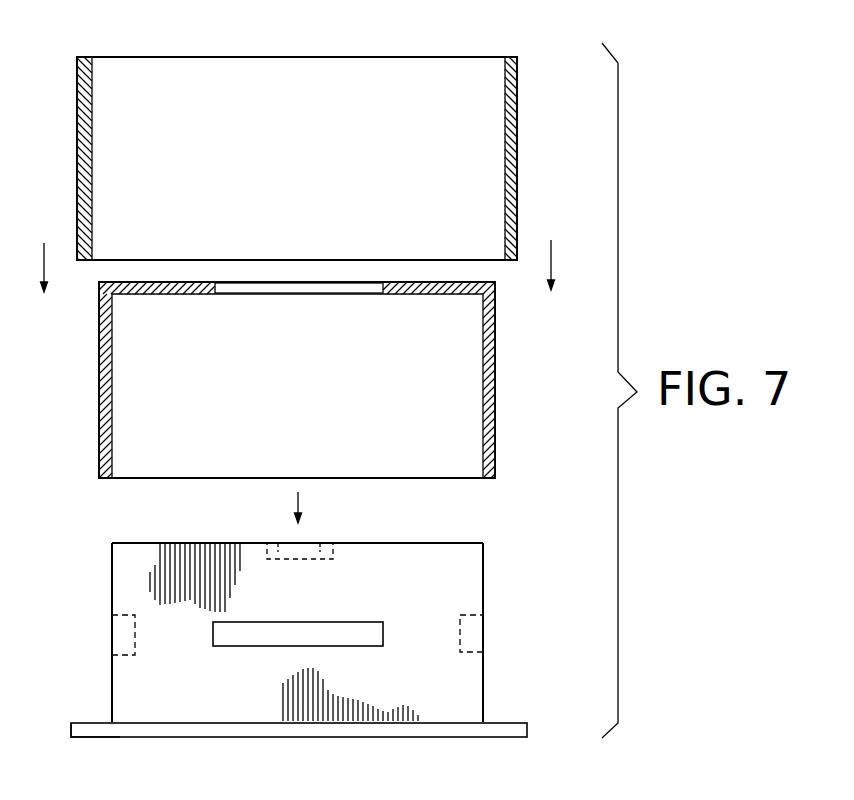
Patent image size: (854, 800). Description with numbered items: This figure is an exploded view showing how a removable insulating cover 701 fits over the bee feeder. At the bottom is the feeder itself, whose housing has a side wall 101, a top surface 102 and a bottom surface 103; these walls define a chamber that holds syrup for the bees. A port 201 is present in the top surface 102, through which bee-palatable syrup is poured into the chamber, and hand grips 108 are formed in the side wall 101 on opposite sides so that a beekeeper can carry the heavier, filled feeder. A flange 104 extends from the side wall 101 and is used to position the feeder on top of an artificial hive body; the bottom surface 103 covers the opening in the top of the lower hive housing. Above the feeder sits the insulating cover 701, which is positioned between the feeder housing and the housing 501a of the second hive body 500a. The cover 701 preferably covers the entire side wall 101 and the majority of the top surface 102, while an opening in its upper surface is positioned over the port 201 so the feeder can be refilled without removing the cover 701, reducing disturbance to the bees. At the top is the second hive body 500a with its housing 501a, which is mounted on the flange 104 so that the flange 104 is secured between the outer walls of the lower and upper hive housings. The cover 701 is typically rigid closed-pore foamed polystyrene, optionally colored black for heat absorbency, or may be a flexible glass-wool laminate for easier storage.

The second hive body 500a is at (540, 96).
The housing of second hive body 501a is at (517, 193).
The insulating cover 701 is at (99, 442).
The side wall 101 is at (112, 600).
The top surface 102 is at (123, 543).
The port 201 is at (332, 556).
The hand grip 108 is at (472, 643).
The bottom surface 103 is at (507, 738).
The flange 104 is at (71, 728).